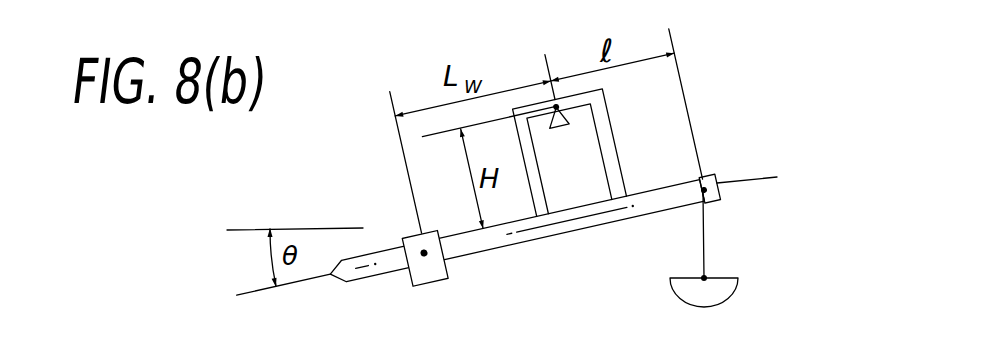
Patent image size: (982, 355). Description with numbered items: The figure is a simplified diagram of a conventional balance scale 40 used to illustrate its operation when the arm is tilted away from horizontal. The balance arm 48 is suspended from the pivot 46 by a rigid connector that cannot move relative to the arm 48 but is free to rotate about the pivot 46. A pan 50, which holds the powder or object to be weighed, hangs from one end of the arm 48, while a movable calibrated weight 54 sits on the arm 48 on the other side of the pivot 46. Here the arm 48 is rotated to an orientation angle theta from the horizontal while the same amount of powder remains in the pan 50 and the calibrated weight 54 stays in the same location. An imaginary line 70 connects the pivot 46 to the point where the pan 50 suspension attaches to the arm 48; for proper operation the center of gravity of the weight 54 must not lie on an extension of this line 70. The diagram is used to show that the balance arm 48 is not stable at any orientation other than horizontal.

The balance scale 40 is at (724, 112).
The pivot 46 is at (567, 125).
The balance arm 48 is at (385, 250).
The pan 50 is at (730, 290).
The movable calibrated weight 54 is at (430, 279).
The imaginary line 70 is at (755, 178).